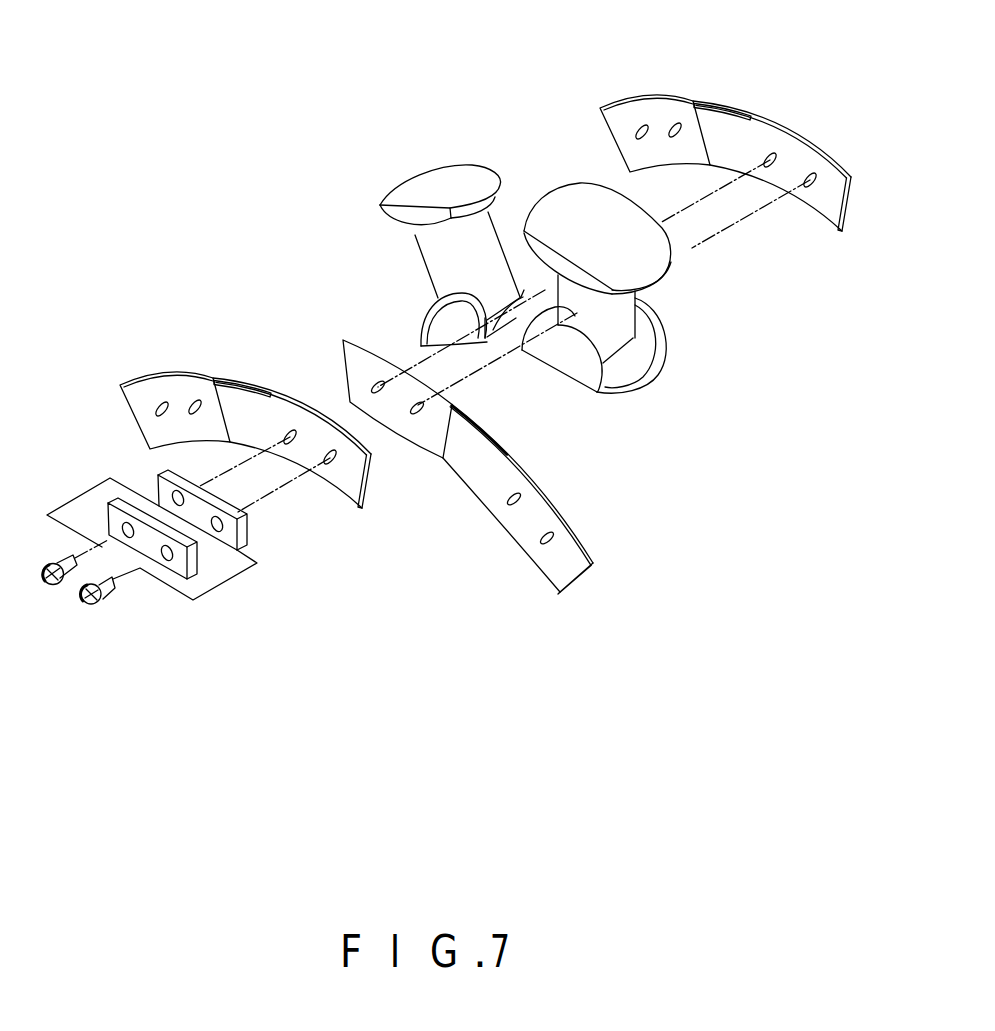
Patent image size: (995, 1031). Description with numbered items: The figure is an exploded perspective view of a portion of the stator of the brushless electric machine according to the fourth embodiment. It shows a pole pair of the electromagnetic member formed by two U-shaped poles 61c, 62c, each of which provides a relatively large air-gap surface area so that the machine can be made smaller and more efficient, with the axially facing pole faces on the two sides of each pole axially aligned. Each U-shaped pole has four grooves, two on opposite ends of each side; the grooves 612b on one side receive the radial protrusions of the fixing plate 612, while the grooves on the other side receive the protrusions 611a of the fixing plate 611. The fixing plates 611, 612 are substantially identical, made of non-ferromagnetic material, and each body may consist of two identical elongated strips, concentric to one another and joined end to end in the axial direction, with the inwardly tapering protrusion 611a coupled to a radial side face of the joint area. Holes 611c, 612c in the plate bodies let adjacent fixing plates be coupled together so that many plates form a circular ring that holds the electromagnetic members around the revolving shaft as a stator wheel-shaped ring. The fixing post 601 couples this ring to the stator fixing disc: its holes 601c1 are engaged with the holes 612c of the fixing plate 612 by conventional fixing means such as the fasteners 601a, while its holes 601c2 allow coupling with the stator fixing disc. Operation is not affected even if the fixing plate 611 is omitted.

The U-shaped pole 61c is at (575, 195).
The fixing plate 611 is at (740, 147).
The protrusion 611a is at (704, 101).
The hole 611c is at (810, 183).
The fixing plate 612 is at (568, 563).
The groove 612b is at (517, 325).
The hole 612c is at (543, 542).
The U-shaped pole 62c is at (567, 360).
The fixing post 601 is at (190, 522).
The fastener 601a is at (92, 607).
The hole of fixing post 601c1 is at (217, 527).
The hole of fixing post 601c2 is at (165, 556).